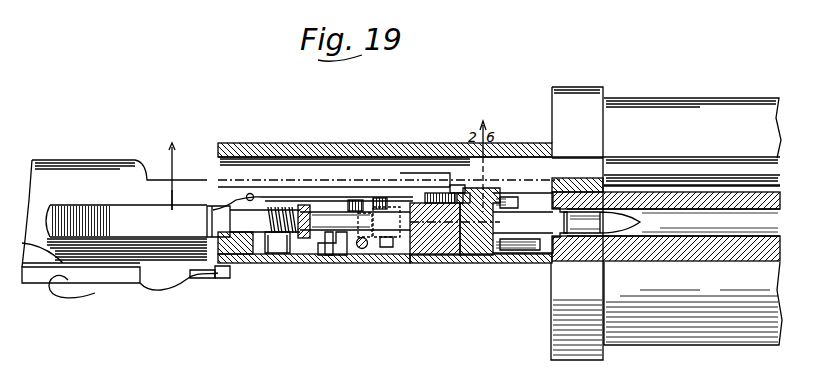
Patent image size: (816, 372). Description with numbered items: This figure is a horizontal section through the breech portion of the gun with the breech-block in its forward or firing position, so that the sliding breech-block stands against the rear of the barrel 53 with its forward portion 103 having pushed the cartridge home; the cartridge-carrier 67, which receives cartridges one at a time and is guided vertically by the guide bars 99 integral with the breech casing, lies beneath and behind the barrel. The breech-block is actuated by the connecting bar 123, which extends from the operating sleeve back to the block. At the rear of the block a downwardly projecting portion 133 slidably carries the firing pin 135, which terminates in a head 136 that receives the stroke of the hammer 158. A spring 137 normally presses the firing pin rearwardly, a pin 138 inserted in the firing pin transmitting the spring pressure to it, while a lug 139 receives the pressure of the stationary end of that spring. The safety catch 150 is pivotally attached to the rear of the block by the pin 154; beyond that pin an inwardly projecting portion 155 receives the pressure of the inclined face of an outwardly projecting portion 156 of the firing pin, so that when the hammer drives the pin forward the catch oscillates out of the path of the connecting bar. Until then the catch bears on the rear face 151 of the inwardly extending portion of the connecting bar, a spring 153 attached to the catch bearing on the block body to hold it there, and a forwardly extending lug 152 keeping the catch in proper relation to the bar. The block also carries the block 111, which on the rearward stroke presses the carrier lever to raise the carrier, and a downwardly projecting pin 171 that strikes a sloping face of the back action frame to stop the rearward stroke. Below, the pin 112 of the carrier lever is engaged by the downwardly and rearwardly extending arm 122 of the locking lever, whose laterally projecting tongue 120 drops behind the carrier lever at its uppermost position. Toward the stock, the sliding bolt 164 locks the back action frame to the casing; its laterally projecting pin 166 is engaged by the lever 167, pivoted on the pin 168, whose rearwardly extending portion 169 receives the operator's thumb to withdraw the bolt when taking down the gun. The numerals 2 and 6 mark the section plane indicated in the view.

The hammer 158 is at (118, 228).
The rearwardly extending portion 169 is at (95, 293).
The section line 2 is at (163, 176).
The section line 6 is at (178, 184).
The pin 168 is at (212, 238).
The head 136 is at (200, 279).
The laterally projecting pin 166 is at (222, 279).
The outwardly projecting portion 156 is at (214, 206).
The inwardly projecting portion 155 is at (225, 203).
The pin 154 is at (252, 194).
The sliding bolt 164 is at (282, 256).
The spring 137 is at (303, 205).
The lug 139 is at (352, 200).
The laterally projecting tongue 120 is at (381, 198).
The downwardly projecting portion 133 is at (227, 264).
The lever 167 is at (238, 255).
The pin 138 is at (268, 254).
The pin 112 is at (330, 256).
The downwardly and rearwardly extending arm 122 is at (323, 257).
The firing pin 135 is at (316, 233).
The block 111 is at (363, 249).
The downwardly projecting pin 171 is at (388, 247).
The spring 153 is at (416, 242).
The safety catch 150 is at (438, 193).
The rear face 151 is at (455, 186).
The forwardly extending lug 152 is at (464, 193).
The guide bars 99 is at (492, 190).
The forward portion 103 is at (478, 263).
The cartridge-carrier 67 is at (527, 254).
The connecting bar 123 is at (672, 168).
The barrel 53 is at (714, 262).